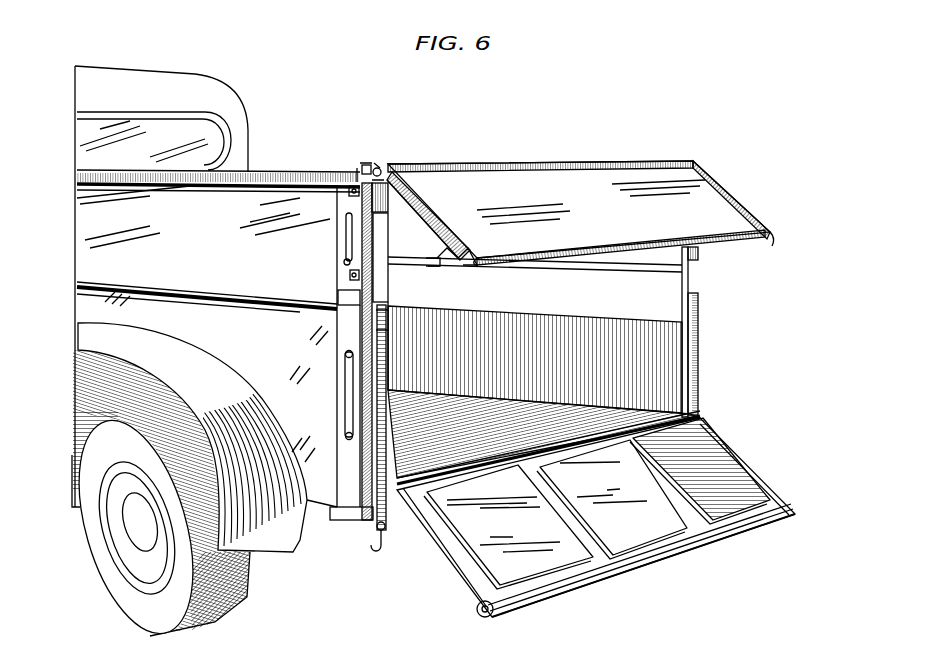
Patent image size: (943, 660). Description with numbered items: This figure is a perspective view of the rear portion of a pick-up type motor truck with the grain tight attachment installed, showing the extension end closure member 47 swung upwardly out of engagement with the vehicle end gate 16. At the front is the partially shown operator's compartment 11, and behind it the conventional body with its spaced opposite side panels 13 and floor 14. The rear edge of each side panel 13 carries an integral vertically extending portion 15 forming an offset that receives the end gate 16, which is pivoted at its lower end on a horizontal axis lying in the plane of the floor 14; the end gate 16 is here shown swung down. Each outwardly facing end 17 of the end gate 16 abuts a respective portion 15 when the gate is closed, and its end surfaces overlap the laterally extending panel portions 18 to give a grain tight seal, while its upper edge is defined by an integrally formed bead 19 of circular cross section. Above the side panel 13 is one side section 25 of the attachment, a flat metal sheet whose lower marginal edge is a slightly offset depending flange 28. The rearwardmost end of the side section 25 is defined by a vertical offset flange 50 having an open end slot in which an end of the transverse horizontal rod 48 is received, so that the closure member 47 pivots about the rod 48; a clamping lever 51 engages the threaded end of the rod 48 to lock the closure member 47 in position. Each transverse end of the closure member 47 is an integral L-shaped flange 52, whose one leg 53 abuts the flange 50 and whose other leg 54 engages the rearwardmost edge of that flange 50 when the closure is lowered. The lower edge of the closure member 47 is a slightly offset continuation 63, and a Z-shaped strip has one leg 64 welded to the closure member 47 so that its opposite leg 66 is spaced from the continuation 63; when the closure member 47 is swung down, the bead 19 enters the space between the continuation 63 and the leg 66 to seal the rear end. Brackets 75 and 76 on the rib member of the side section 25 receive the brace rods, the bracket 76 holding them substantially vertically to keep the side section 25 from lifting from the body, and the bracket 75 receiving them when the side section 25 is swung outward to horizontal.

The operator's compartment 11 is at (150, 92).
The side panel 13 is at (318, 493).
The floor 14 is at (544, 437).
The vertically extending portion 15 is at (698, 368).
The end gate 16 is at (552, 560).
The outwardly facing end 17 is at (458, 573).
The laterally extending panel portion 18 is at (682, 323).
The bead 19 is at (665, 563).
The side section 25 is at (256, 222).
The depending flange 28 is at (660, 272).
The closure member 47 is at (575, 203).
The rod 48 is at (366, 174).
The offset flange 50 is at (388, 283).
The clamping lever 51 is at (380, 170).
The L-shaped flange 52 is at (433, 272).
The leg 53 is at (427, 228).
The leg 54 is at (430, 209).
The offset continuation 63 is at (545, 258).
The leg 64 is at (440, 263).
The leg 66 is at (458, 268).
The bracket 75 is at (352, 188).
The bracket 76 is at (350, 275).